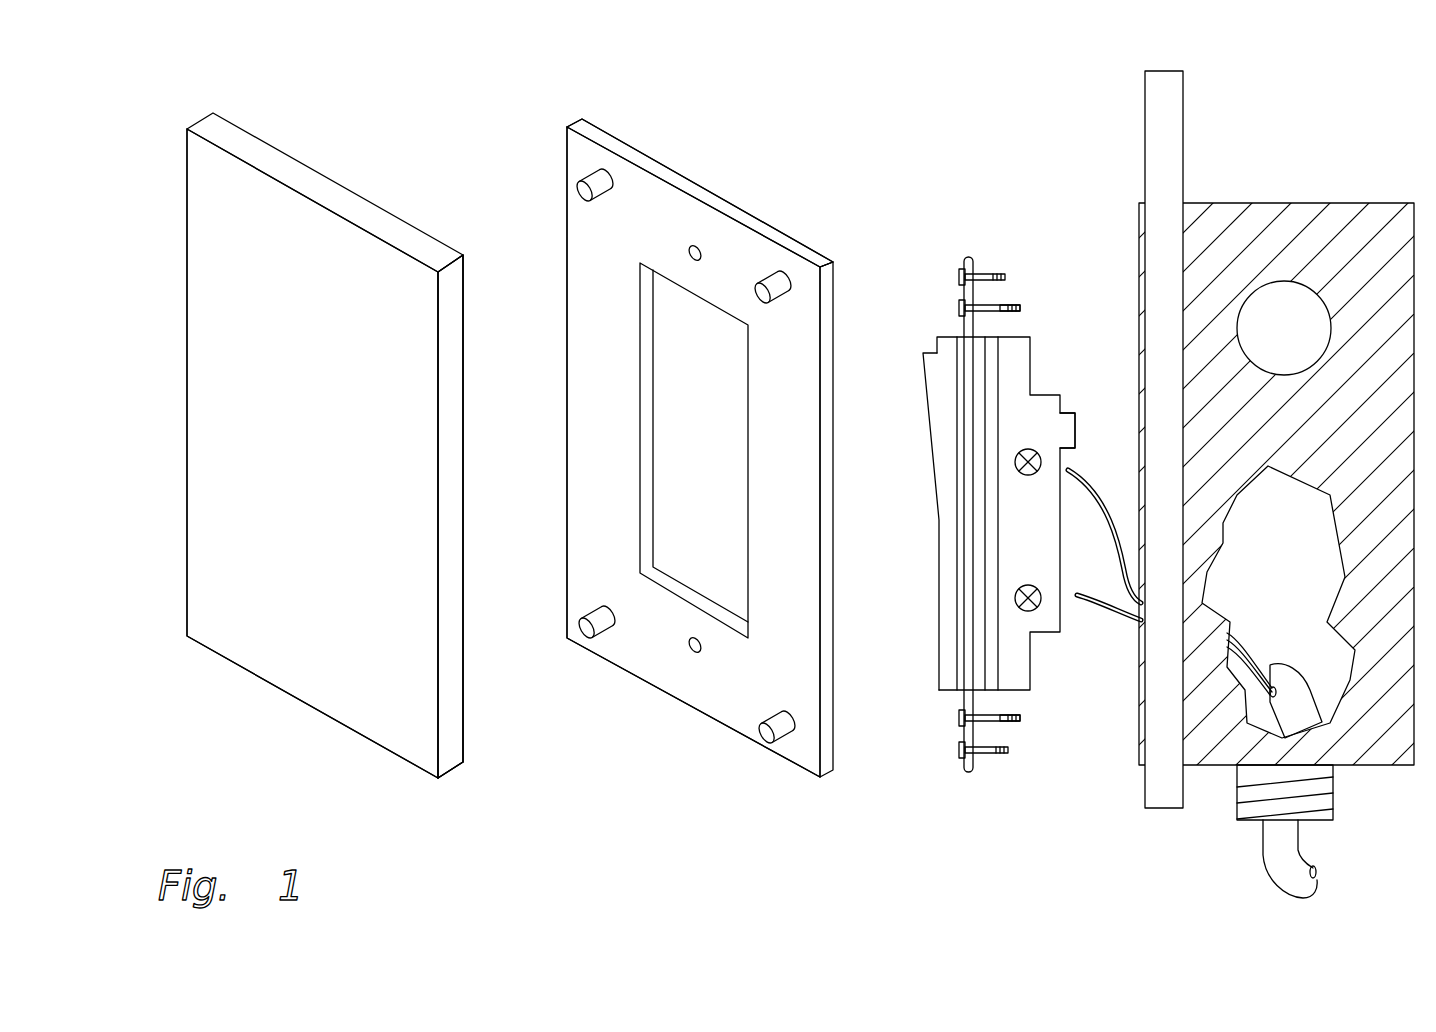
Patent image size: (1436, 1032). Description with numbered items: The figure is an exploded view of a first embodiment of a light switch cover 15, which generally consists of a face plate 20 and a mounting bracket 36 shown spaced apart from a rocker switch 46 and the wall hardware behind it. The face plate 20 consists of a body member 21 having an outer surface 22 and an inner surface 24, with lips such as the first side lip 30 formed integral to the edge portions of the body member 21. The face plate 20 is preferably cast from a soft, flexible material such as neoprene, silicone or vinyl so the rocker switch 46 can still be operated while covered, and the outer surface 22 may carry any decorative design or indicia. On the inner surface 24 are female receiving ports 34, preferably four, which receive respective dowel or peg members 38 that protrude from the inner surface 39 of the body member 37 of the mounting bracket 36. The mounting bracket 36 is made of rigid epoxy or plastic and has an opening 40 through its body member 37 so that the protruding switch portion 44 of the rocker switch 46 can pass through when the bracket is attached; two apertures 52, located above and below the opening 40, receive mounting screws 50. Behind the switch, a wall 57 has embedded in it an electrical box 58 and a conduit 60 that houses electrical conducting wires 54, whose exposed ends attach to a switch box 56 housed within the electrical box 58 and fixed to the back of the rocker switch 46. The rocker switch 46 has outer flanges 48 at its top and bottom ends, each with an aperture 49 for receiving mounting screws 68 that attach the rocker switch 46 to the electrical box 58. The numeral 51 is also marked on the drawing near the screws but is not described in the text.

The light switch cover 15 is at (934, 162).
The face plate 20 is at (335, 449).
The body member 21 is at (462, 763).
The outer surface 22 is at (248, 367).
The inner surface 24 is at (456, 508).
The first side lip 30 is at (438, 450).
The female receiving ports 34 is at (480, 678).
The mounting bracket 36 is at (623, 400).
The body member 37 is at (813, 245).
The peg members 38 is at (603, 183).
The inner surface 39 is at (603, 251).
The opening 40 is at (686, 512).
The protruding switch portion 44 is at (922, 367).
The rocker switch 46 is at (998, 333).
The outer flanges 48 is at (970, 262).
The aperture 49 is at (1005, 300).
The mounting screws 50 is at (985, 274).
The screw head 51 is at (963, 292).
The apertures 52 is at (697, 247).
The electrical conducting wires 54 is at (1070, 470).
The switch box 56 is at (1064, 398).
The wall 57 is at (1145, 793).
The electrical box 58 is at (1365, 432).
The conduit 60 is at (1335, 797).
The mounting screws 68 is at (1025, 310).